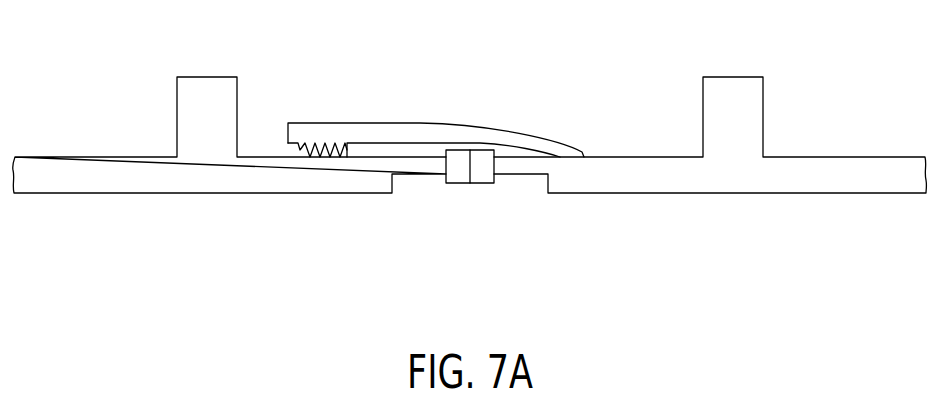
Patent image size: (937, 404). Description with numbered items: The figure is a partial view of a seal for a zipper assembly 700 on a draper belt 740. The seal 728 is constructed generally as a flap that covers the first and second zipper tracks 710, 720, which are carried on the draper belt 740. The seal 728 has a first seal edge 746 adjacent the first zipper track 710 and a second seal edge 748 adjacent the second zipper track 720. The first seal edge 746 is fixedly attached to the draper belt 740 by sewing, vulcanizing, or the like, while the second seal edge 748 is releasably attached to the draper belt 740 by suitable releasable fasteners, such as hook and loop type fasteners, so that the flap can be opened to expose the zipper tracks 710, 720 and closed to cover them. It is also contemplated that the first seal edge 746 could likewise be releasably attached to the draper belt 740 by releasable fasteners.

The zipper assembly 700 is at (470, 170).
The first zipper track 710 is at (481, 184).
The second zipper track 720 is at (455, 184).
The seal 728 is at (418, 100).
The draper belt 740 is at (80, 194).
The first seal edge 746 is at (296, 147).
The second seal edge 748 is at (583, 152).